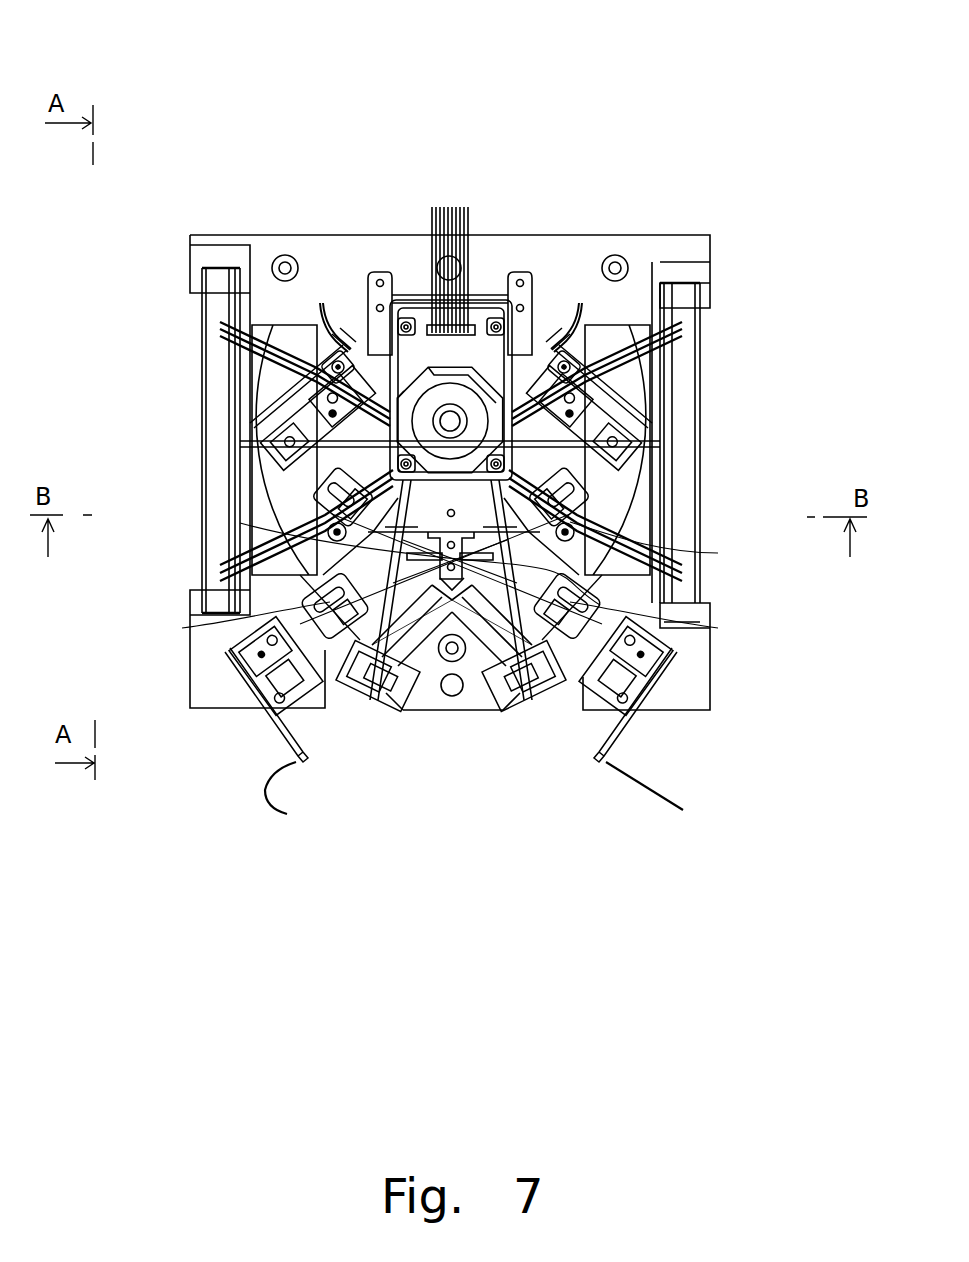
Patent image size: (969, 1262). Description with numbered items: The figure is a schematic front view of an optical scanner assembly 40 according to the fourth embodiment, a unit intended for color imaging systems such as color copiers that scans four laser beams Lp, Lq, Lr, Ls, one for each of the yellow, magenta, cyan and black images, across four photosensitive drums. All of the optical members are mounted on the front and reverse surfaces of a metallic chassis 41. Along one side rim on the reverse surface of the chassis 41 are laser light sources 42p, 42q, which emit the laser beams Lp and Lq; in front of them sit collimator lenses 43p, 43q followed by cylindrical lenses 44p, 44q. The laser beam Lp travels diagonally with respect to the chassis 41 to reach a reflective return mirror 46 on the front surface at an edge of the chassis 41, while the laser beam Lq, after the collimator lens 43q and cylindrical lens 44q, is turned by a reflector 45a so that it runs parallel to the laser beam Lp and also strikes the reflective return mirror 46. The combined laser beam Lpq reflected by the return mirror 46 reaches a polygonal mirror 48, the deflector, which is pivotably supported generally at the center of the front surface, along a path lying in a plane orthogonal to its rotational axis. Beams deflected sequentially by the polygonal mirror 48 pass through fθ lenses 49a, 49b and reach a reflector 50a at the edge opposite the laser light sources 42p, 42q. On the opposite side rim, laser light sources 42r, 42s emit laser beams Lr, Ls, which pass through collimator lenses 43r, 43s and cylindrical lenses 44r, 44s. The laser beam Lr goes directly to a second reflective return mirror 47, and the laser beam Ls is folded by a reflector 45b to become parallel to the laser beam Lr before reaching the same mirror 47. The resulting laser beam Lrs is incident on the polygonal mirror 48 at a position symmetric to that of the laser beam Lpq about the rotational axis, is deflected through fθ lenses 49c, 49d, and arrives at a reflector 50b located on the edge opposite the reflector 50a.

The optical scanner assembly 40 is at (607, 111).
The chassis 41 is at (352, 234).
The laser light source 42p is at (660, 398).
The laser light source 42q is at (653, 683).
The laser light source 42r is at (277, 400).
The laser light source 42s is at (263, 693).
The collimator lens 43p is at (660, 432).
The collimator lens 43q is at (670, 652).
The collimator lens 43r is at (280, 425).
The collimator lens 43s is at (277, 652).
The cylindrical lens 44p is at (640, 512).
The cylindrical lens 44q is at (615, 598).
The cylindrical lens 44r is at (255, 504).
The cylindrical lens 44s is at (240, 604).
The reflector 45a is at (610, 590).
The reflector 45b is at (230, 530).
The reflective return mirror 46 is at (380, 705).
The reflective return mirror 47 is at (525, 690).
The polygonal mirror 48 is at (487, 400).
The fθ lens 49a is at (365, 373).
The fθ lens 49b is at (280, 373).
The fθ lens 49c is at (533, 393).
The fθ lens 49d is at (586, 326).
The reflector 50a is at (215, 456).
The reflector 50b is at (688, 357).
The laser beam Lp is at (590, 470).
The laser beam Lq is at (585, 690).
The laser beam Lr is at (250, 488).
The laser beam Ls is at (347, 650).
The laser beam Lpq is at (420, 703).
The laser beam Lrs is at (482, 698).